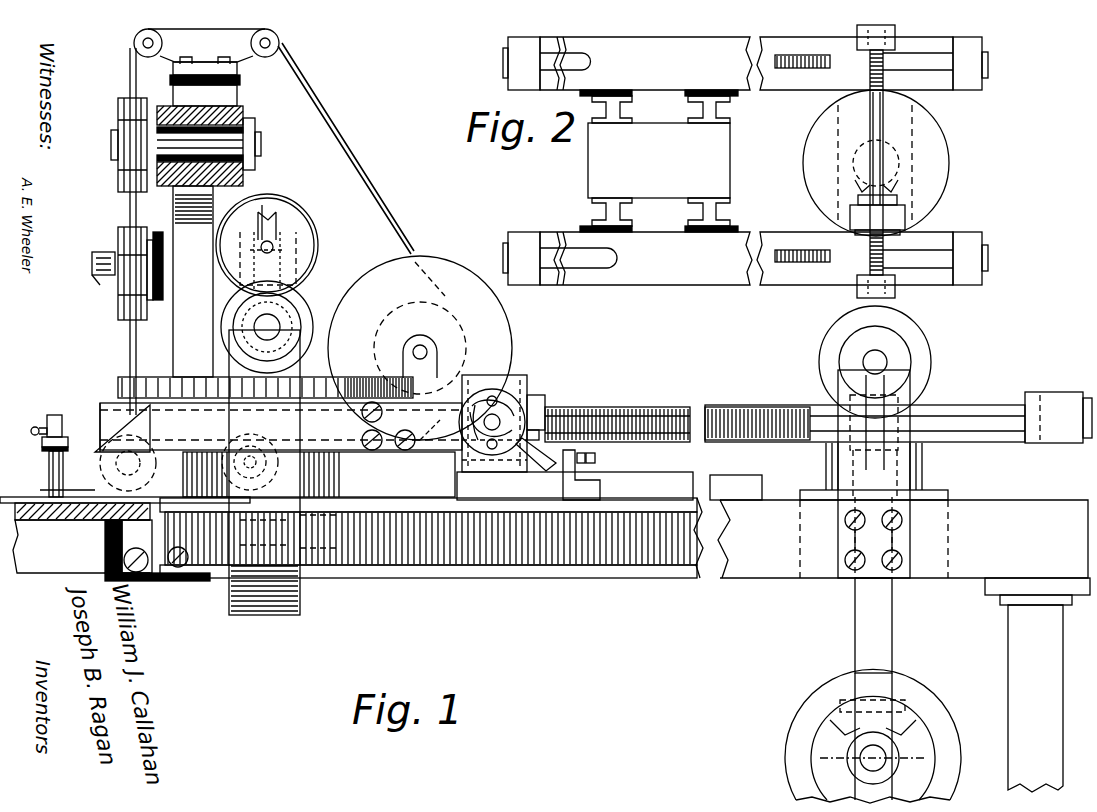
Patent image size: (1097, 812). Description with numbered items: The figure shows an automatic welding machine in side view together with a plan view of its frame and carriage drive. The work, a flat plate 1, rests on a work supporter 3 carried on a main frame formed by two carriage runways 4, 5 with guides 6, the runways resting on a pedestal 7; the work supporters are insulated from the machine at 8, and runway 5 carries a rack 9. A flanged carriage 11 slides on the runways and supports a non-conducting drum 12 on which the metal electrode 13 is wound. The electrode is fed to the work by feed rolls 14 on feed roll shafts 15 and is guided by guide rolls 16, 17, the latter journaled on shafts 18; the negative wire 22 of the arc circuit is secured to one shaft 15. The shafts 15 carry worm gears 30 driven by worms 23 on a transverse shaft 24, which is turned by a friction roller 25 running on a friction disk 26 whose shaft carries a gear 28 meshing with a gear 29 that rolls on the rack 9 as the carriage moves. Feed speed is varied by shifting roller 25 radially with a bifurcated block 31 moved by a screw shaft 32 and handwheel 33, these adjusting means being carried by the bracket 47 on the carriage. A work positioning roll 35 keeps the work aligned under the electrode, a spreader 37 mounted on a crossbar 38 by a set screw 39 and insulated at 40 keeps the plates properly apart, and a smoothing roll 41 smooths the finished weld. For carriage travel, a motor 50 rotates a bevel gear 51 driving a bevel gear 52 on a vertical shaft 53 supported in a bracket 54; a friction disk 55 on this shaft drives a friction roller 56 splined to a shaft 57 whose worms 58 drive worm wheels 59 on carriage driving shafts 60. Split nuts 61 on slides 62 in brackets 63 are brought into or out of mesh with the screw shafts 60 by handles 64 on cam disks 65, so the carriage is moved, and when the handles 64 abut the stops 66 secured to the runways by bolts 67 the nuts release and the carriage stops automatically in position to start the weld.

In FIG. 1, the flat plate 1 is at (52, 503).
In FIG. 1, the work supporter 3 is at (82, 521).
In FIG. 2, the work supporter 3 is at (659, 160).
In FIG. 1, the carriage runway 4 is at (82, 546).
In FIG. 2, the carriage runway 4 is at (745, 63).
In FIG. 1, the carriage runway 5 is at (650, 572).
In FIG. 2, the carriage runway 5 is at (745, 258).
In FIG. 1, the guide 6 is at (748, 482).
In FIG. 1, the pedestal 7 is at (1037, 685).
In FIG. 1, the insulation 8 is at (148, 582).
In FIG. 2, the insulation 8 is at (684, 94).
In FIG. 1, the rack 9 is at (502, 533).
In FIG. 1, the carriage 11 is at (170, 210).
In FIG. 1, the drum 12 is at (431, 263).
In FIG. 1, the metal electrode 13 is at (352, 162).
In FIG. 1, the feed roll 14 is at (118, 236).
In FIG. 1, the feed roll shaft 15 is at (92, 264).
In FIG. 1, the guide roll 16 is at (134, 43).
In FIG. 1, the guide roll 17 is at (118, 109).
In FIG. 1, the shaft 18 is at (252, 147).
In FIG. 1, the negative wire 22 is at (90, 286).
In FIG. 1, the worm 23 is at (302, 302).
In FIG. 1, the transverse shaft 24 is at (267, 327).
In FIG. 1, the friction roller 25 is at (310, 326).
In FIG. 1, the friction disk 26 is at (338, 410).
In FIG. 1, the gear 28 is at (310, 523).
In FIG. 1, the gear 29 is at (326, 546).
In FIG. 1, the worm gear 30 is at (276, 236).
In FIG. 1, the bifurcated block 31 is at (296, 240).
In FIG. 1, the screw shaft 32 is at (274, 249).
In FIG. 1, the handwheel 33 is at (262, 205).
In FIG. 1, the work positioning roll 35 is at (100, 456).
In FIG. 1, the spreader 37 is at (49, 478).
In FIG. 1, the crossbar 38 is at (42, 444).
In FIG. 1, the set screw 39 is at (32, 432).
In FIG. 1, the insulation 40 is at (48, 420).
In FIG. 1, the smoothing roll 41 is at (278, 452).
In FIG. 1, the bracket 47 is at (318, 474).
In FIG. 1, the motor 50 is at (800, 744).
In FIG. 1, the bevel gear 51 is at (836, 760).
In FIG. 2, the bevel gear 51 is at (897, 184).
In FIG. 1, the bevel gear 52 is at (835, 733).
In FIG. 2, the bevel gear 52 is at (900, 150).
In FIG. 1, the vertical shaft 53 is at (868, 630).
In FIG. 1, the bracket 54 is at (930, 497).
In FIG. 2, the bracket 54 is at (914, 130).
In FIG. 1, the friction disk 55 is at (942, 421).
In FIG. 2, the friction disk 55 is at (815, 130).
In FIG. 1, the friction roller 56 is at (920, 352).
In FIG. 2, the friction roller 56 is at (850, 216).
In FIG. 1, the shaft 57 is at (878, 358).
In FIG. 2, the shaft 57 is at (868, 164).
In FIG. 1, the worm 58 is at (858, 352).
In FIG. 2, the worm 58 is at (868, 78).
In FIG. 1, the worm wheel 59 is at (866, 383).
In FIG. 2, the worm wheel 59 is at (895, 40).
In FIG. 1, the carriage driving shaft 60 is at (660, 410).
In FIG. 2, the carriage driving shaft 60 is at (592, 61).
In FIG. 1, the split nut 61 is at (540, 396).
In FIG. 1, the slide 62 is at (508, 384).
In FIG. 1, the bracket 63 is at (421, 423).
In FIG. 1, the handle 64 is at (548, 446).
In FIG. 1, the cam disk 65 is at (494, 386).
In FIG. 1, the stop 66 is at (581, 475).
In FIG. 1, the bolt 67 is at (592, 472).